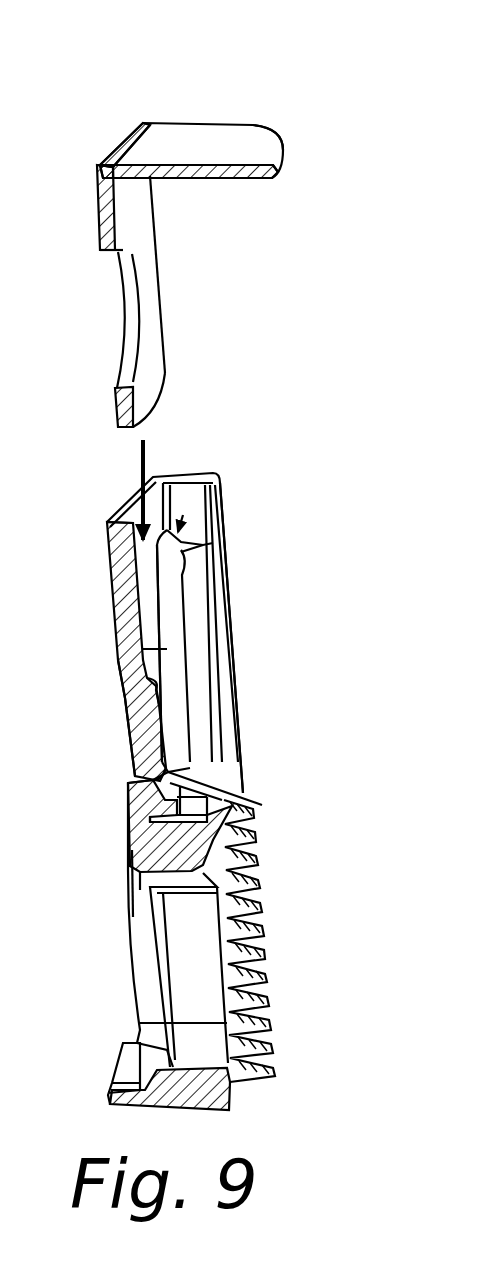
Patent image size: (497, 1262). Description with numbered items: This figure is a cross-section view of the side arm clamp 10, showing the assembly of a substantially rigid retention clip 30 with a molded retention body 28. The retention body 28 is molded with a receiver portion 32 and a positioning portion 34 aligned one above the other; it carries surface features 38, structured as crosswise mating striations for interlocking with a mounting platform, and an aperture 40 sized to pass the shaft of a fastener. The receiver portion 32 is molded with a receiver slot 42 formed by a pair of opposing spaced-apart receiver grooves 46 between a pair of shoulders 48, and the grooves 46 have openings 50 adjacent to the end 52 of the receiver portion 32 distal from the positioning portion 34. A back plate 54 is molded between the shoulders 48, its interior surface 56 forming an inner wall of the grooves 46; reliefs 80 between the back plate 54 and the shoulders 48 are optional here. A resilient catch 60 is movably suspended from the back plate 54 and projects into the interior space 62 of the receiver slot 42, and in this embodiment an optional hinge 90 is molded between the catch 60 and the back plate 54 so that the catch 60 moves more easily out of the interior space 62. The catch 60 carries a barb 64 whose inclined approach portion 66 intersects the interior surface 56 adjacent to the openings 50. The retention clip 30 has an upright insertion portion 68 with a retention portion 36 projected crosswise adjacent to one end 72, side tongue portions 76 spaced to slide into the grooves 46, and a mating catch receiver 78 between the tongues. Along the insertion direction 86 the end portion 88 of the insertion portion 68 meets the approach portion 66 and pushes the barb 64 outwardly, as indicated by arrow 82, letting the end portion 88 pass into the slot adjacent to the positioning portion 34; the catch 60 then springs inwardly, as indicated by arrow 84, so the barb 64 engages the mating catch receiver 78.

The side arm clamp 10 is at (141, 77).
The retention clip 30 is at (113, 149).
The retention portion 36 is at (268, 152).
The end 72 is at (100, 165).
The insertion portion 68 is at (140, 218).
The side tongue portions 76 is at (152, 295).
The mating catch receiver 78 is at (137, 333).
The end portion 88 is at (133, 428).
The receiver slot 42 is at (117, 497).
The insertion direction arrow 86 is at (148, 449).
The end 52 is at (112, 521).
The back plate 54 is at (107, 607).
The receiver grooves 46 is at (118, 648).
The hinge 90 is at (153, 684).
The inward spring arrow 84 is at (124, 760).
The shoulders 48 is at (220, 521).
The openings 50 is at (212, 484).
The interior space 62 is at (170, 598).
The interior surface 56 is at (150, 632).
The reliefs 80 is at (167, 649).
The receiver portion 32 is at (240, 695).
The approach portion 66 is at (163, 731).
The resilient catch 60 is at (177, 753).
The outward movement arrow 82 is at (184, 758).
The barb 64 is at (260, 805).
The retention body 28 is at (128, 881).
The surface features 38 is at (262, 907).
The aperture 40 is at (207, 1043).
The positioning portion 34 is at (132, 1043).